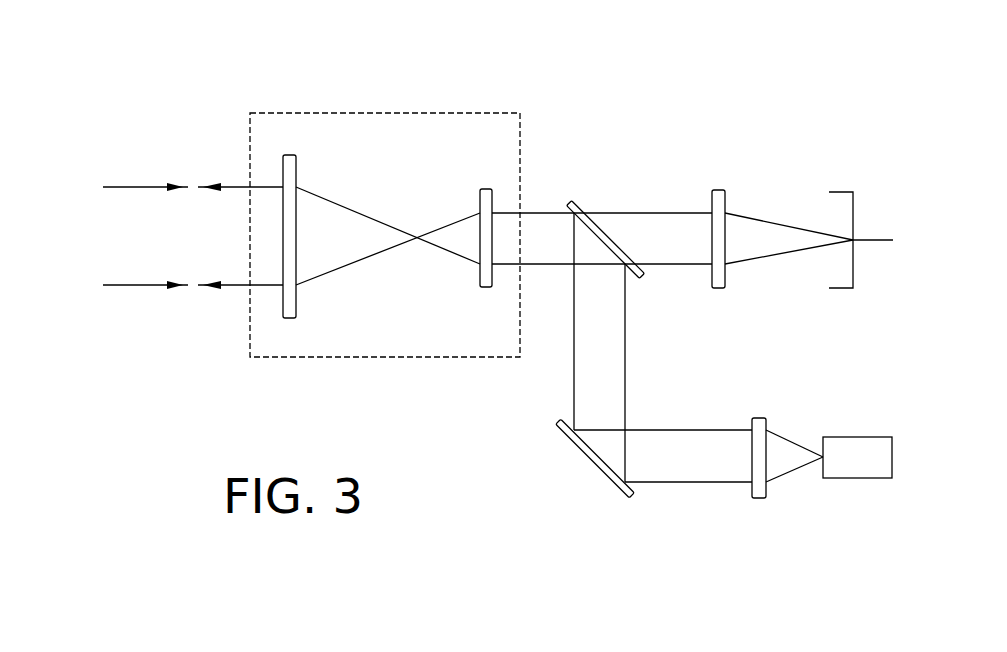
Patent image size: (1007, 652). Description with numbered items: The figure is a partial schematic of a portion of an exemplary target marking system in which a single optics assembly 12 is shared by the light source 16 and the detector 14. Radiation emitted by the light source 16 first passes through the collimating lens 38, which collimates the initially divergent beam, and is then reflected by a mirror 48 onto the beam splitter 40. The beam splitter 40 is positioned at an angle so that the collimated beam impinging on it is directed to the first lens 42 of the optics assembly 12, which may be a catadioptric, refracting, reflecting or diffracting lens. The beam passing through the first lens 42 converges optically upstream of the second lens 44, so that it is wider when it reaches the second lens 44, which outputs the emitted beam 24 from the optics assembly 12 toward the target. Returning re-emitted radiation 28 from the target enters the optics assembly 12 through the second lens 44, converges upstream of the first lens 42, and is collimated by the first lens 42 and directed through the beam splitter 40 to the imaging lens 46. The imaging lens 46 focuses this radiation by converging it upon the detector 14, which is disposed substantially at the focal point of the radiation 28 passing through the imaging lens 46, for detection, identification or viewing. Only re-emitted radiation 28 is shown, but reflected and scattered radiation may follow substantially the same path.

The optics assembly 12 is at (385, 112).
The detector 14 is at (842, 192).
The light source 16 is at (858, 478).
The emitted beam 24 is at (234, 186).
The re-emitted radiation 28 is at (125, 186).
The collimating lens 38 is at (757, 418).
The beam splitter 40 is at (582, 210).
The first lens 42 is at (487, 188).
The second lens 44 is at (290, 154).
The imaging lens 46 is at (718, 190).
The mirror 48 is at (633, 497).